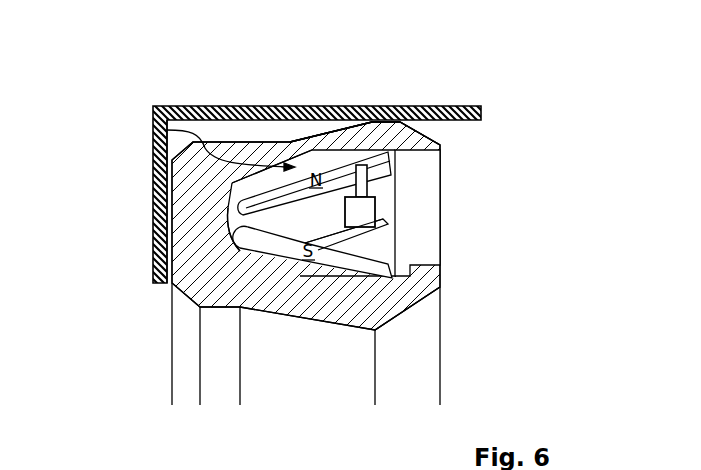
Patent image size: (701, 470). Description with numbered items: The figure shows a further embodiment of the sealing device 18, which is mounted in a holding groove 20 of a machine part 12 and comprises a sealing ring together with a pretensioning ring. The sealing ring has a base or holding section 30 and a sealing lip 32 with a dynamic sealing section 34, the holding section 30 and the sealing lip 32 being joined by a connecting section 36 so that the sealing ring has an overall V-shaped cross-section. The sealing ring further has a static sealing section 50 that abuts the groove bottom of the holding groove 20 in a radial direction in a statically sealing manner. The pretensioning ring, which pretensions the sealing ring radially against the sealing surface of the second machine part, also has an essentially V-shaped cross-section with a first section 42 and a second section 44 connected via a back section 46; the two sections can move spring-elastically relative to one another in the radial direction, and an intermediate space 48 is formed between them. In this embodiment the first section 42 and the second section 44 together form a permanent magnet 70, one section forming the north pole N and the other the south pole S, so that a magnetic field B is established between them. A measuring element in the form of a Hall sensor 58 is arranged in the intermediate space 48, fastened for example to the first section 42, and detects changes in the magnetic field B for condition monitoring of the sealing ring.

The machine part 12 is at (199, 107).
The sealing device 18 is at (156, 133).
The holding groove 20 is at (188, 126).
The holding section 30 is at (313, 142).
The sealing lip 32 is at (341, 306).
The sealing section 34 is at (377, 331).
The connecting section 36 is at (236, 211).
The first section 42 is at (339, 172).
The second section 44 is at (300, 244).
The back section 46 is at (290, 218).
The intermediate space 48 is at (244, 224).
The static sealing section 50 is at (400, 127).
The Hall sensor 58 is at (363, 211).
The permanent magnet 70 is at (268, 190).
The magnetic field B is at (377, 245).